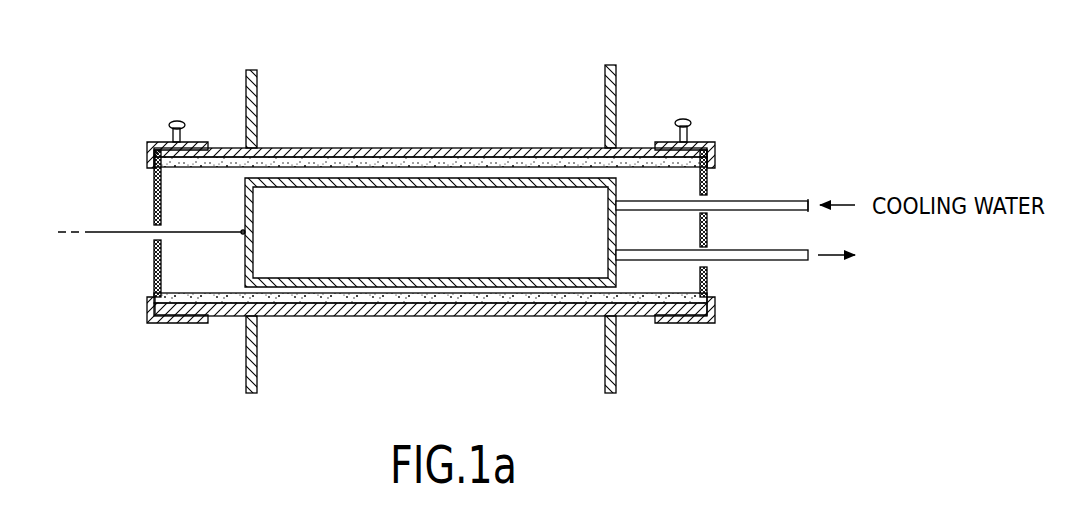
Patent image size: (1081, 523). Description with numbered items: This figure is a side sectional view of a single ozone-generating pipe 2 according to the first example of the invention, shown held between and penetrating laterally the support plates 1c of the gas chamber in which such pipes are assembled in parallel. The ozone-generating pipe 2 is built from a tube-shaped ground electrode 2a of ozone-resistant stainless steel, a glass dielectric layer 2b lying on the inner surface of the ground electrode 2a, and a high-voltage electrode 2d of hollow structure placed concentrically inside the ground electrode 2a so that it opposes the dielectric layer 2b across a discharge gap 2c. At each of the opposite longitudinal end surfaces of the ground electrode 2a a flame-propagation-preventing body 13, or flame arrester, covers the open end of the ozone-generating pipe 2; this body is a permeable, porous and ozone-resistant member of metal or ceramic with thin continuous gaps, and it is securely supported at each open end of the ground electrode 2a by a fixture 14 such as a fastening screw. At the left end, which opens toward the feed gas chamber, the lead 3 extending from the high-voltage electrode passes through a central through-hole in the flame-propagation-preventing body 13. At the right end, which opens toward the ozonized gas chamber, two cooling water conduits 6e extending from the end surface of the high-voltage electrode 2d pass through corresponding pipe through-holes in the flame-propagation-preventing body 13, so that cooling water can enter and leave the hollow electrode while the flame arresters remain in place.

The support plate 1c is at (248, 70).
The ozone-generating pipe 2 is at (423, 249).
The ground electrode 2a is at (300, 150).
The dielectric layer 2b is at (328, 303).
The discharge gap 2c is at (374, 293).
The high-voltage electrode 2d is at (435, 178).
The lead 3 is at (90, 236).
The cooling water conduit 6e is at (806, 200).
The flame-propagation-preventing body 13 is at (154, 218).
The fixture 14 is at (170, 123).